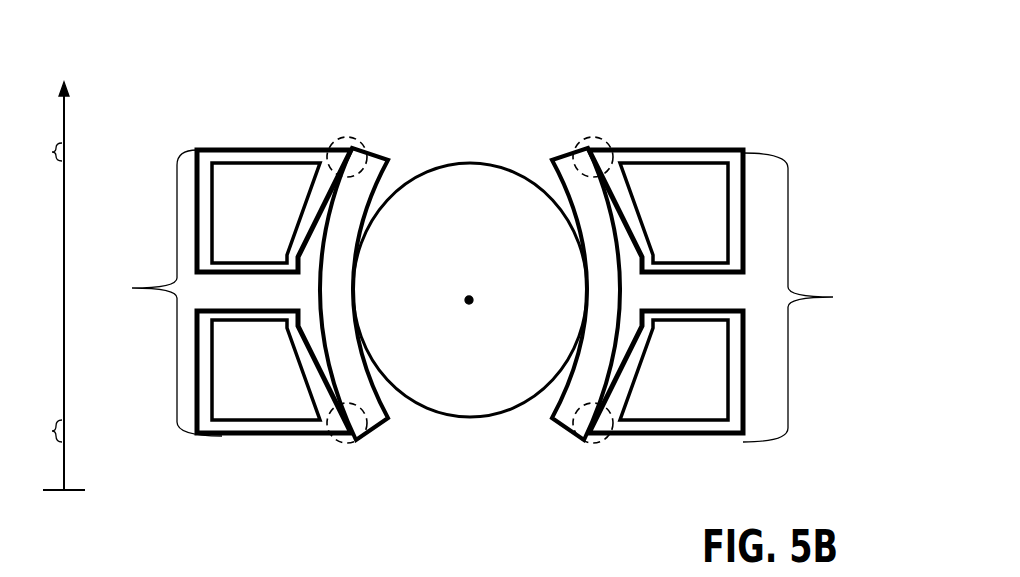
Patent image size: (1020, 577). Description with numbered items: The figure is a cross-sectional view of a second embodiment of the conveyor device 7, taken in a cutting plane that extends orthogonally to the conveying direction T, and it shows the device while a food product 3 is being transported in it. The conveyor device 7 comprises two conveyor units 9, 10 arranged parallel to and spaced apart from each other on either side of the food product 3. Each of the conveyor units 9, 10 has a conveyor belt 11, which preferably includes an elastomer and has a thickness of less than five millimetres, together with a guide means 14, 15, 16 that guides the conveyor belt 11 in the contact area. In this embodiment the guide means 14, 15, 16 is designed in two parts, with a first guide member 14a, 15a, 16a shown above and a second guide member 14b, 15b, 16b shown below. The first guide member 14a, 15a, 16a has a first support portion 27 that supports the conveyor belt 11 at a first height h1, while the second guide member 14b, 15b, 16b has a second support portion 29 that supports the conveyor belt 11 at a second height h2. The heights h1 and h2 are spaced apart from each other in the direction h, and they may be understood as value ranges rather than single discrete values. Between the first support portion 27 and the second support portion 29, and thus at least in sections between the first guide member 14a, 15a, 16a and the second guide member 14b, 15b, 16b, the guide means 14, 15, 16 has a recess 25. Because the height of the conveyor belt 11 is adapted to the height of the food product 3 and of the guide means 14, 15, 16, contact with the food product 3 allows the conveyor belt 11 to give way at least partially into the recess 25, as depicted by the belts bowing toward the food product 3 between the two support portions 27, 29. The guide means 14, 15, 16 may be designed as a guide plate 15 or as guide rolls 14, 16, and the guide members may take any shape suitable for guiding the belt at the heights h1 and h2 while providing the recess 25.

The food product 3 is at (453, 176).
The conveyor device 7 is at (302, 75).
The conveyor unit 9 is at (659, 143).
The conveyor unit 10 is at (226, 143).
The conveyor belt 11 is at (382, 425).
The guide means 14 is at (499, 295).
The guide means 15 is at (519, 295).
The guide means 16 is at (526, 295).
The first guide member 14a is at (292, 112).
The first guide member 15a is at (565, 176).
The first guide member 16a is at (565, 176).
The second guide member 14b is at (262, 418).
The second guide member 15b is at (535, 411).
The second guide member 16b is at (535, 411).
The recess 25 is at (270, 298).
The first support portion 27 is at (370, 145).
The second support portion 29 is at (347, 448).
The conveying direction T is at (470, 296).
The direction h is at (75, 121).
The first height h1 is at (39, 153).
The second height h2 is at (39, 432).